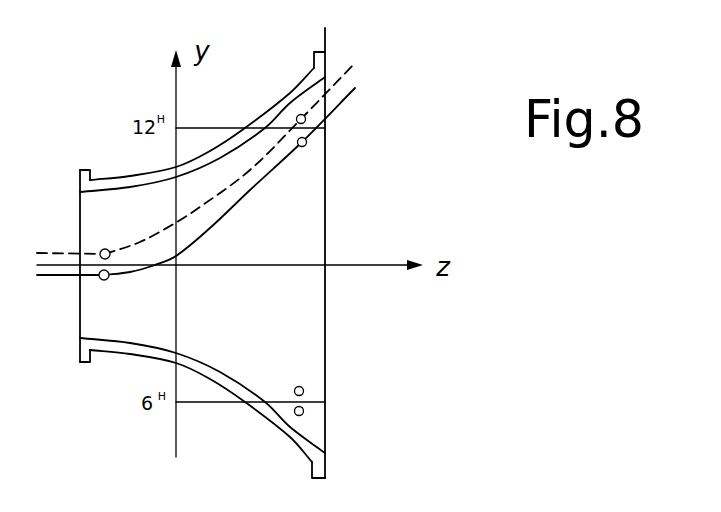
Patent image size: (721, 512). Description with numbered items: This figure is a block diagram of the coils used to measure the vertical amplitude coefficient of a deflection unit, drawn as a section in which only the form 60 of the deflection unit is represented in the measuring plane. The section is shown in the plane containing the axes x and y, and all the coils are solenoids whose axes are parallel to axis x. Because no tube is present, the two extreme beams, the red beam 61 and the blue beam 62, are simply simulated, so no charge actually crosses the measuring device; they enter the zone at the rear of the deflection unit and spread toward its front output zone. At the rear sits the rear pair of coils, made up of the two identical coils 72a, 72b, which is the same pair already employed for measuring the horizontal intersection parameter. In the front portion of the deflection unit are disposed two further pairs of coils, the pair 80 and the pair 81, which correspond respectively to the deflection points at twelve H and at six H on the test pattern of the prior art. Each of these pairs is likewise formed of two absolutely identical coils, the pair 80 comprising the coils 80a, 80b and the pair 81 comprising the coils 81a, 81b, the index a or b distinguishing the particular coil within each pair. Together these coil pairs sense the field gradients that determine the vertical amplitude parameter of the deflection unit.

The form of the deflection unit 60 is at (325, 30).
The extreme red beam 61 is at (349, 63).
The extreme blue beam 62 is at (356, 89).
The coil of the rear pair of coils 72a is at (108, 250).
The coil of the rear pair of coils 72b is at (104, 280).
The pair of coils 80 is at (355, 156).
The coil of pair 80 80a is at (305, 118).
The coil of pair 80 80b is at (306, 141).
The pair of coils 81 is at (340, 391).
The coil of pair 81 81a is at (303, 391).
The coil of pair 81 81b is at (304, 412).